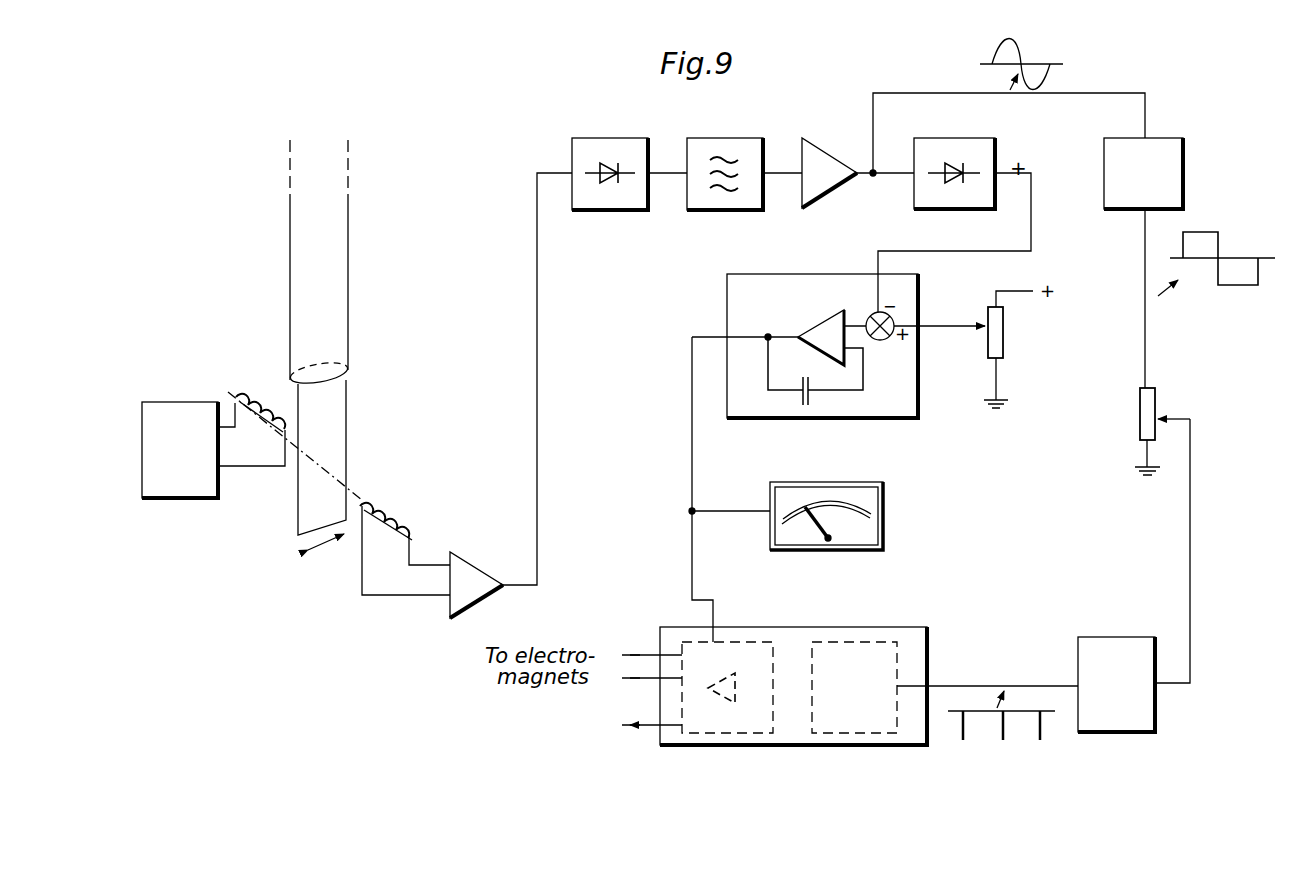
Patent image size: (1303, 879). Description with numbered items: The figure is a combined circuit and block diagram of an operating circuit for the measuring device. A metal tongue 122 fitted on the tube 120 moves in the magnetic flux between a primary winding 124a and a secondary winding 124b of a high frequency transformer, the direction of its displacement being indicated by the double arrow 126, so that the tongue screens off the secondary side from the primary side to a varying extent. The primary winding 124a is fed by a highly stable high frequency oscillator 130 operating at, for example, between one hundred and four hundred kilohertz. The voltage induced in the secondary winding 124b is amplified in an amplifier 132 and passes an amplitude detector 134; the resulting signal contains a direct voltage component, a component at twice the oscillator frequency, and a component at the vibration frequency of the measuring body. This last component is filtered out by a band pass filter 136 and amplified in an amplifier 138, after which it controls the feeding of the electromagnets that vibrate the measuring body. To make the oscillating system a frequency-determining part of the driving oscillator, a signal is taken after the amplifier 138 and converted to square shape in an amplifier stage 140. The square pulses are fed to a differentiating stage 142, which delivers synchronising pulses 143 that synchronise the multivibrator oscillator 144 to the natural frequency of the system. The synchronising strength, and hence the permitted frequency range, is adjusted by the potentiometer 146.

The tube 120 is at (326, 244).
The metal tongue 122 is at (333, 416).
The primary winding 124a is at (272, 380).
The secondary winding 124b is at (424, 484).
The direction of displacement 126 is at (330, 546).
The high frequency oscillator 130 is at (187, 413).
The amplifier 132 is at (462, 568).
The amplitude detector 134 is at (608, 150).
The band pass filter 136 is at (725, 150).
The amplifier 138 is at (824, 163).
The amplifier stage 140 is at (1172, 178).
The differentiating stage 142 is at (1127, 648).
The synchronising pulses 143 is at (1003, 737).
The oscillator 144 is at (855, 657).
The potentiometer 146 is at (1144, 416).